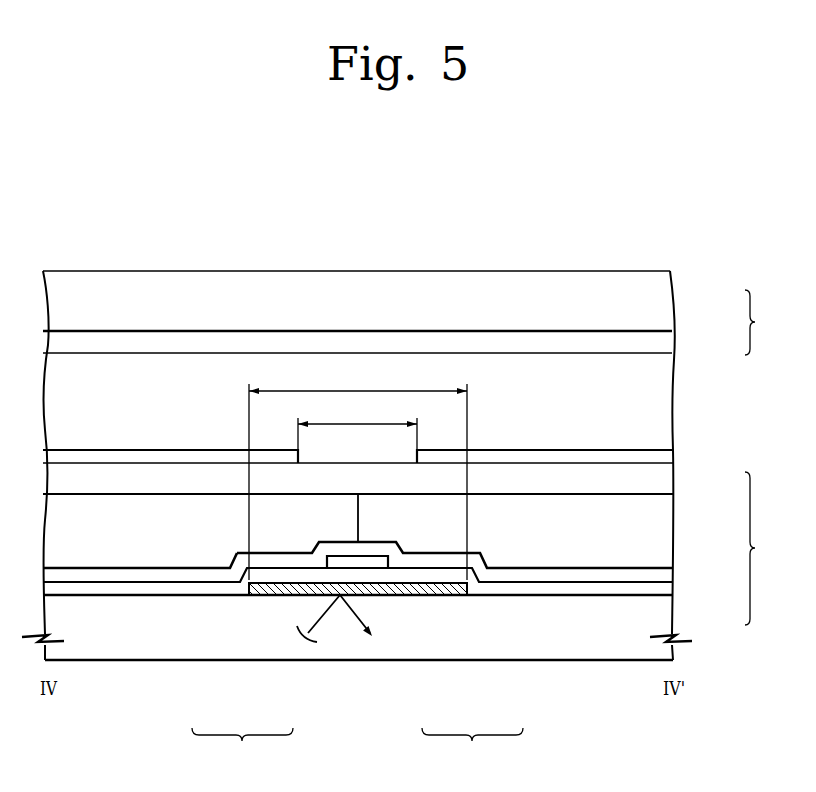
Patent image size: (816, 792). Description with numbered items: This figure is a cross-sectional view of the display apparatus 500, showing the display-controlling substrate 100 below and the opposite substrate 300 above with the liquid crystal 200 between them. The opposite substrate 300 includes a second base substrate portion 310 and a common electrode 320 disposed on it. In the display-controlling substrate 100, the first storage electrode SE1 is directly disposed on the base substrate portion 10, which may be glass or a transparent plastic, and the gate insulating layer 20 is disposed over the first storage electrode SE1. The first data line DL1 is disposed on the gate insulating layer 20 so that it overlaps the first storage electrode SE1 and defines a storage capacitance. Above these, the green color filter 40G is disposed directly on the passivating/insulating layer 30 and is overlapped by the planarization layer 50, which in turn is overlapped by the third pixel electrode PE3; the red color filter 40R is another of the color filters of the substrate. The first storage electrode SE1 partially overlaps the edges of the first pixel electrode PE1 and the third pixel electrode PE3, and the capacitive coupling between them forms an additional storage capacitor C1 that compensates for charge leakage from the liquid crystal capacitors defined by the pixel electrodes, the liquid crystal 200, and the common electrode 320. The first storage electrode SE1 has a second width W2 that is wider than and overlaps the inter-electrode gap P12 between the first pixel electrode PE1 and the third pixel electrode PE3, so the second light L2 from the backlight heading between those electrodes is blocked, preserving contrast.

The display apparatus 500 is at (658, 257).
The second base substrate portion 310 is at (660, 298).
The common electrode 320 is at (660, 343).
The opposite substrate 300 is at (767, 322).
The liquid crystal 200 is at (660, 402).
The planarization layer 50 is at (660, 483).
The green color filter 40G is at (663, 538).
The red color filter 40R is at (122, 557).
The passivating/insulating layer 30 is at (665, 572).
The gate insulating layer 20 is at (663, 592).
The base substrate portion 10 is at (660, 617).
The display-controlling substrate 100 is at (769, 548).
The first pixel electrode PE1 is at (193, 457).
The third pixel electrode PE3 is at (505, 457).
The first storage electrode SE1 is at (283, 596).
The first data line DL1 is at (368, 562).
The second light L2 is at (322, 618).
The storage capacitor C1 is at (357, 747).
The second width W2 is at (358, 471).
The inter-electrode gap P12 is at (357, 424).